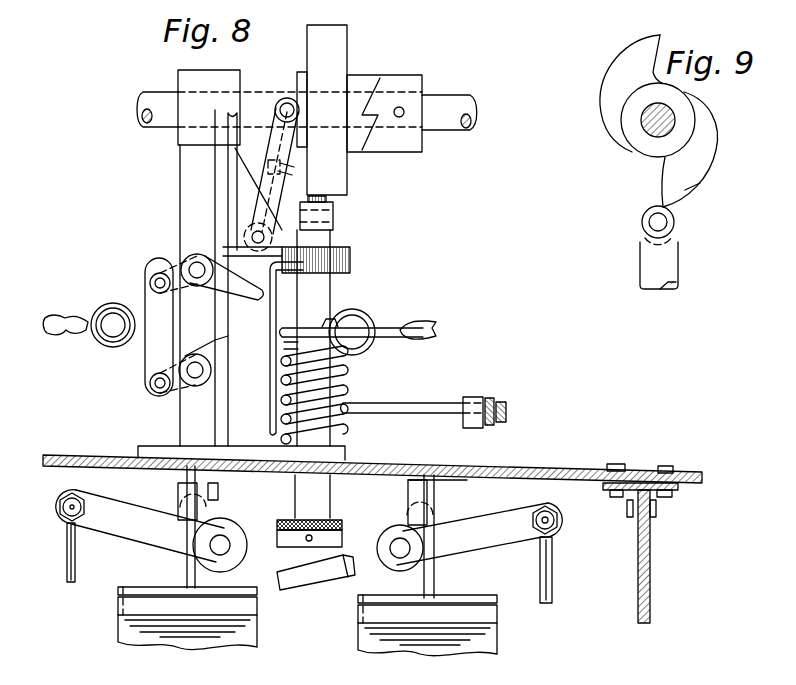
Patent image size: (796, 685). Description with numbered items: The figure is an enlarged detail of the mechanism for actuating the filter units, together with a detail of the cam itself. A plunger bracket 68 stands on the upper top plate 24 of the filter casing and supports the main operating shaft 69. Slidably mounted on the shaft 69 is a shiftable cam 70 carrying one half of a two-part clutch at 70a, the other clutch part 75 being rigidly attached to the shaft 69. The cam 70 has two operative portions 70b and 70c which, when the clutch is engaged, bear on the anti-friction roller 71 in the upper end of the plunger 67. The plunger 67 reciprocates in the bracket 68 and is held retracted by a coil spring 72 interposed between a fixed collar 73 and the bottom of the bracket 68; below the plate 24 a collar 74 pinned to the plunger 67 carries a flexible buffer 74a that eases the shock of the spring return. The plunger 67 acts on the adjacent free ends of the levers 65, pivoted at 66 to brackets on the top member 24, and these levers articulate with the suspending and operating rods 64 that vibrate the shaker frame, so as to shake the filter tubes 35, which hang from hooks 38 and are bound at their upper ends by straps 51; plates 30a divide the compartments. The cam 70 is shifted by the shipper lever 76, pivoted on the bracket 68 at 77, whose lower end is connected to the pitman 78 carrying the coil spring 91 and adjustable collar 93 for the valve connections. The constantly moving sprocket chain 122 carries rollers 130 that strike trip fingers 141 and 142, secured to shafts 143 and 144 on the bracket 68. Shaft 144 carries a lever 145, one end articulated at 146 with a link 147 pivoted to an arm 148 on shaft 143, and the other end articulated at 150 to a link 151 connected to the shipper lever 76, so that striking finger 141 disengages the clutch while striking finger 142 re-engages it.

In FIG. 8, the main operating shaft 69 is at (160, 92).
In FIG. 8, the plunger bracket 68 is at (188, 192).
In FIG. 8, the link 151 is at (348, 248).
In FIG. 8, the shiftable cam 70 is at (298, 76).
In FIG. 9, the shiftable cam 70 is at (637, 105).
In FIG. 8, the clutch part 75 is at (412, 83).
In FIG. 8, the clutch half 70a is at (372, 80).
In FIG. 8, the shipper lever 76 is at (264, 174).
In FIG. 8, the pivot 77 is at (250, 231).
In FIG. 8, the articulation 150 is at (242, 243).
In FIG. 8, the anti-friction roller 71 is at (334, 208).
In FIG. 9, the anti-friction roller 71 is at (676, 223).
In FIG. 8, the plunger 67 is at (332, 502).
In FIG. 9, the plunger 67 is at (666, 272).
In FIG. 8, the coil spring 72 is at (350, 361).
In FIG. 8, the fixed collar 73 is at (300, 328).
In FIG. 8, the lug or anti-friction roller 130 is at (368, 317).
In FIG. 8, the sprocket chain 122 is at (440, 324).
In FIG. 8, the trip finger 141 is at (175, 345).
In FIG. 8, the lever 145 is at (165, 266).
In FIG. 8, the articulation 146 is at (152, 282).
In FIG. 8, the shaft 144 is at (168, 262).
In FIG. 8, the trip finger 142 is at (230, 299).
In FIG. 8, the arm 148 is at (172, 392).
In FIG. 8, the link 147 is at (148, 355).
In FIG. 8, the shaft 143 is at (197, 380).
In FIG. 8, the pitman 78 is at (421, 413).
In FIG. 8, the adjustable collar 93 is at (468, 399).
In FIG. 8, the coil spring 91 is at (494, 398).
In FIG. 8, the upper top plate 24 is at (542, 469).
In FIG. 8, the dividing plate 30a is at (649, 559).
In FIG. 8, the hook 38 is at (186, 580).
In FIG. 8, the lever 65 is at (143, 542).
In FIG. 8, the pivot 66 is at (222, 548).
In FIG. 8, the suspending and operating rod 64 is at (75, 578).
In FIG. 8, the buffer 74a is at (286, 518).
In FIG. 8, the collar 74 is at (276, 538).
In FIG. 8, the strap 51 is at (257, 608).
In FIG. 8, the filter tube 35 is at (227, 640).
In FIG. 9, the operative portion of cam 70b is at (630, 48).
In FIG. 9, the operative portion of cam 70c is at (688, 189).